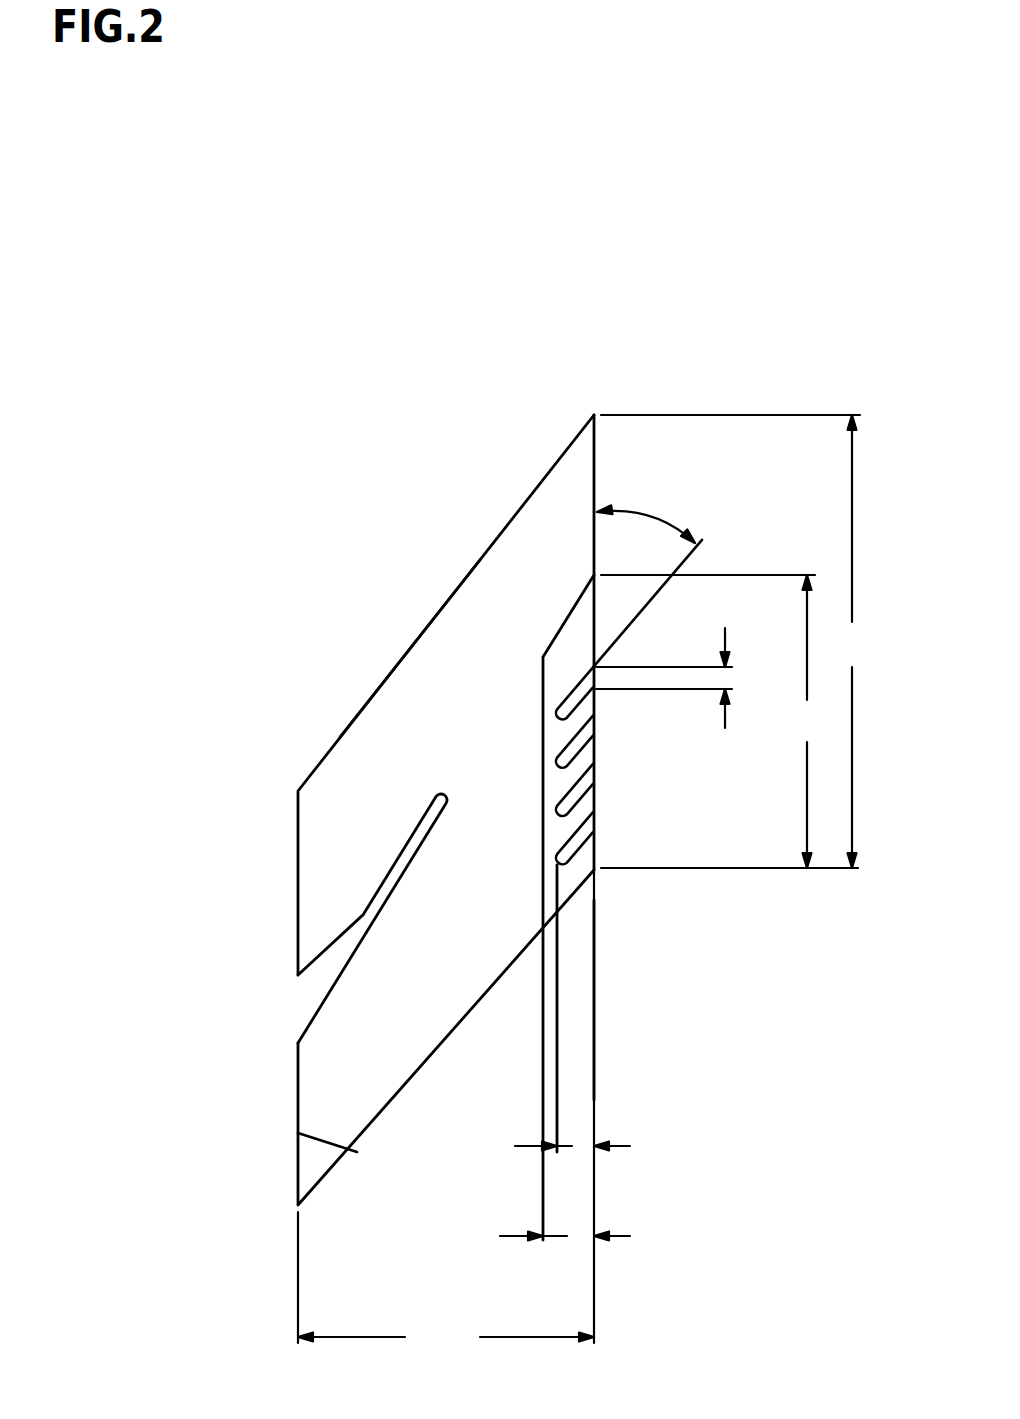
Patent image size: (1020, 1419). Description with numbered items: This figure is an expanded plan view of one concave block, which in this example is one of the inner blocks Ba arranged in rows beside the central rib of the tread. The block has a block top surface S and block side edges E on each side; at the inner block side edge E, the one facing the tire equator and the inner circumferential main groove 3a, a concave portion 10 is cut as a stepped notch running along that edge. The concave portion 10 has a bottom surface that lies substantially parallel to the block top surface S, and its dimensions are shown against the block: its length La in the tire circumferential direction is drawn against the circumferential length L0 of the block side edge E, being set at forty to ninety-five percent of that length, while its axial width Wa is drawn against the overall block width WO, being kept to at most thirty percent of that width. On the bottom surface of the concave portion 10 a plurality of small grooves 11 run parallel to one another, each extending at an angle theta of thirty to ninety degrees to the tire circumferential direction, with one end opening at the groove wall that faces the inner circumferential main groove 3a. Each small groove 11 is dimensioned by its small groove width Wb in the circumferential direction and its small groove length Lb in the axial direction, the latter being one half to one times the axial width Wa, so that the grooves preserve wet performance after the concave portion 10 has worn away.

The concave portion 10 is at (565, 653).
The small groove 11 is at (581, 782).
The block top surface S is at (435, 703).
The block side edge E is at (595, 452).
The inner circumferential main groove 3a is at (692, 963).
The inner block Ba is at (478, 993).
The angle of small groove theta is at (650, 518).
The circumferential length of block side edge L0 is at (734, 641).
The length of concave portion La is at (713, 721).
The small groove width Wb is at (725, 678).
The small groove length Lb is at (572, 1146).
The axial width of concave portion Wa is at (567, 1236).
The block width WO is at (446, 1336).